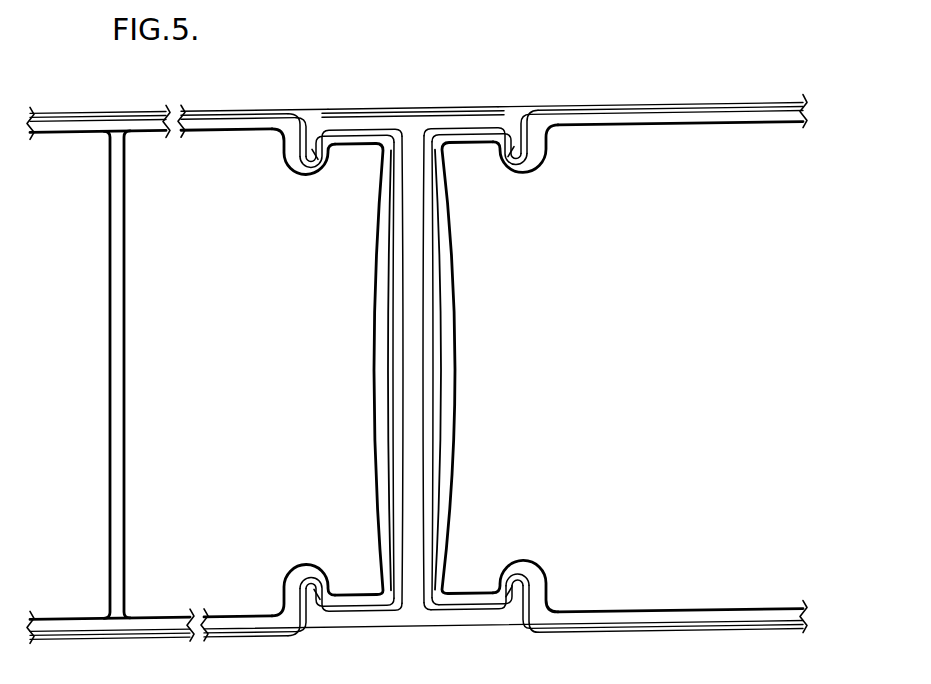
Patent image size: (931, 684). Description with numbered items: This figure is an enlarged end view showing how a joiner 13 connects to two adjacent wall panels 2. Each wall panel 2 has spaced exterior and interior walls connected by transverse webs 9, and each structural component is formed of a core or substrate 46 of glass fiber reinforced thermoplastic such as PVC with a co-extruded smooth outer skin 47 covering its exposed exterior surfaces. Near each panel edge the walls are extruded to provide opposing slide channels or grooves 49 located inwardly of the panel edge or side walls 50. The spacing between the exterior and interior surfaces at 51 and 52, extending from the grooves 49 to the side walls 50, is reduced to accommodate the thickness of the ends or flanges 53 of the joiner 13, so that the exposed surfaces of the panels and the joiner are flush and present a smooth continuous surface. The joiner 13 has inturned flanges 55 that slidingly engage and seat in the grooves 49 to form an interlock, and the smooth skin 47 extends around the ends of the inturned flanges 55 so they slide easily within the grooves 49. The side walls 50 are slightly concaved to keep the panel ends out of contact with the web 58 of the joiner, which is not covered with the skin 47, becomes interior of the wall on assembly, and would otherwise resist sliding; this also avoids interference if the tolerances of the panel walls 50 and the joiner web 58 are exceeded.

The wall panel 2 is at (145, 97).
The transverse web 9 is at (110, 404).
The joiner 13 is at (432, 98).
The core or substrate 46 is at (58, 118).
The outer skin 47 is at (83, 111).
The slide channel or groove 49 is at (290, 171).
The panel edge or side wall 50 is at (378, 398).
The reduced spacing region 51 is at (345, 122).
The reduced spacing region 52 is at (368, 613).
The end or flange of joiner 53 is at (348, 116).
The inturned flange 55 is at (308, 152).
The web of joiner 58 is at (413, 412).